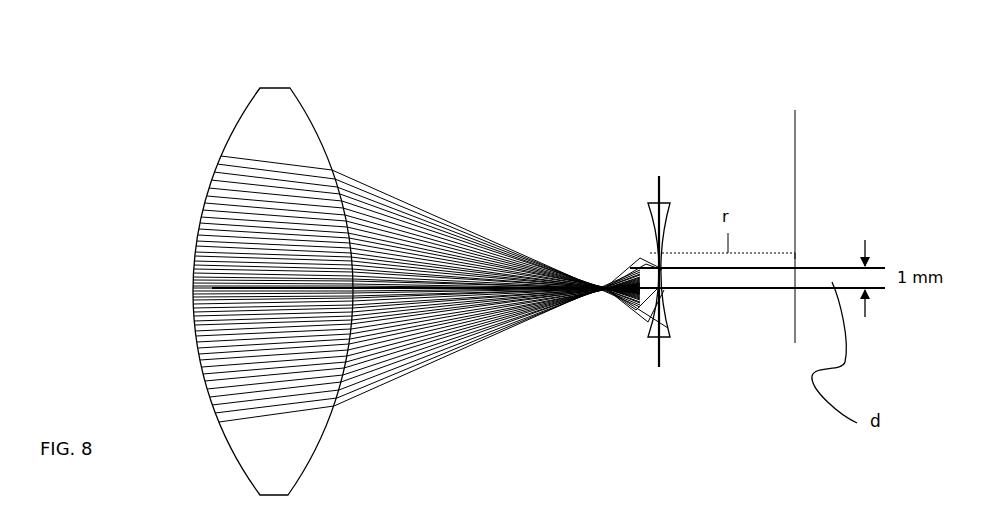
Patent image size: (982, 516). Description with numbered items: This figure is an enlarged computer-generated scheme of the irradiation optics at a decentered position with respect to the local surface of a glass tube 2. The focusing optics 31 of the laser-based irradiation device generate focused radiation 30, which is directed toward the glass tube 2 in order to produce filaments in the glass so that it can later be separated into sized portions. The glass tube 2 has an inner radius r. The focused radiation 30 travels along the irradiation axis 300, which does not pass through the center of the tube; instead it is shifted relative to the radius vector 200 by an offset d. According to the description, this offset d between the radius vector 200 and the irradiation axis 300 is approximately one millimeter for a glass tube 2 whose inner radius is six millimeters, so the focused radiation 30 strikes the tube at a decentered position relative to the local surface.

The focusing optics 31 is at (310, 124).
The focused radiation 30 is at (492, 248).
The glass tube 2 is at (640, 230).
The radius vector 200 is at (815, 265).
The irradiation axis 300 is at (725, 288).